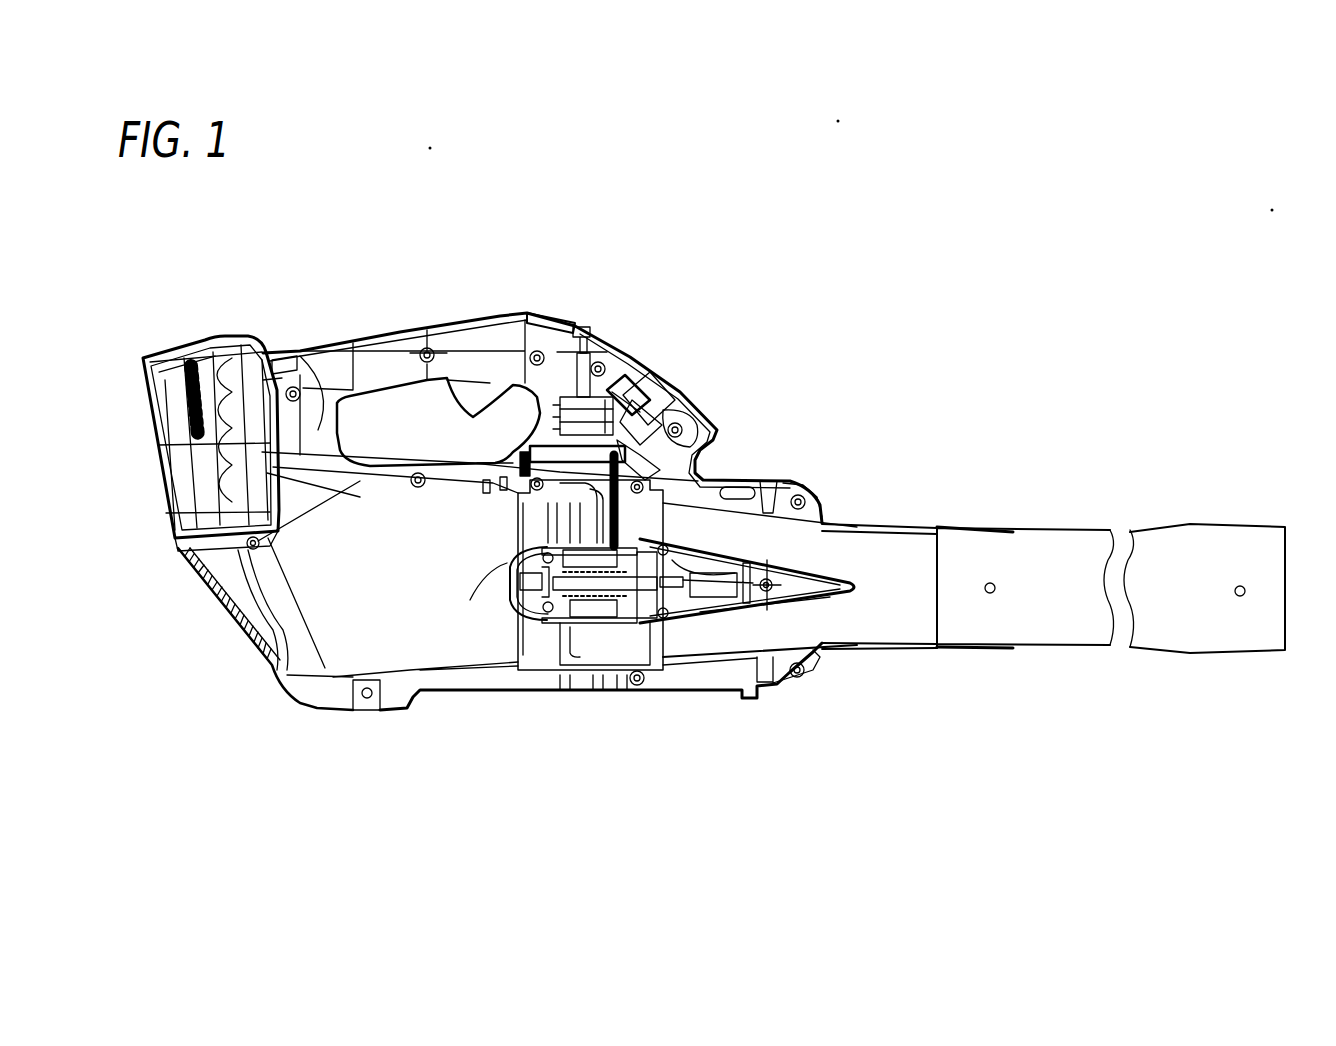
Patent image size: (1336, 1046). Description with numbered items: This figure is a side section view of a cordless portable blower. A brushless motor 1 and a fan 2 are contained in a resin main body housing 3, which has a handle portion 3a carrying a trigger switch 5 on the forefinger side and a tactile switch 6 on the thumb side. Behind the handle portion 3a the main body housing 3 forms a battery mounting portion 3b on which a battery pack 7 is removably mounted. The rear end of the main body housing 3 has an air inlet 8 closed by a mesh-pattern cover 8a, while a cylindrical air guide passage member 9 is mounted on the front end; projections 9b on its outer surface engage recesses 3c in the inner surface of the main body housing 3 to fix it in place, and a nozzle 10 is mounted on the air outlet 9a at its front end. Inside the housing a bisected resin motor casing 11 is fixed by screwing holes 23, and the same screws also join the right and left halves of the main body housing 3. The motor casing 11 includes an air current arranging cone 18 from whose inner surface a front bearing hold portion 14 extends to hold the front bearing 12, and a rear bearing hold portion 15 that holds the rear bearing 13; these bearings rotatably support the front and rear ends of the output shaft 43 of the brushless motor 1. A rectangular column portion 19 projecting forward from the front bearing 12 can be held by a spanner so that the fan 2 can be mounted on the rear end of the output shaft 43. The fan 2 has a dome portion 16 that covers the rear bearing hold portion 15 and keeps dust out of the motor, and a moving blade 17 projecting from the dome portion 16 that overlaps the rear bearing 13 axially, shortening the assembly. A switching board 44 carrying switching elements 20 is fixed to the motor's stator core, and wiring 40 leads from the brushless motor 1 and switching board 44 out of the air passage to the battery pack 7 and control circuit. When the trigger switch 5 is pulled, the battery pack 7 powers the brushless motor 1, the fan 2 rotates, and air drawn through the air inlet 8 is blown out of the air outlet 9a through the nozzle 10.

The brushless motor 1 is at (596, 614).
The fan 2 is at (503, 604).
The main body housing 3 is at (316, 709).
The handle portion 3a is at (381, 352).
The battery mounting portion 3b is at (312, 392).
The recesses 3c is at (765, 492).
The trigger switch 5 is at (489, 383).
The tactile switch 6 is at (550, 317).
The battery pack 7 is at (163, 377).
The air inlet 8 is at (212, 606).
The cover 8a is at (232, 604).
The air guide passage member 9 is at (892, 525).
The air outlet 9a is at (963, 546).
The projections 9b is at (690, 545).
The nozzle 10 is at (1158, 552).
The motor casing 11 is at (568, 664).
The front bearing 12 is at (675, 606).
The rear bearing 13 is at (517, 600).
The front bearing hold portion 14 is at (683, 560).
The rear bearing hold portion 15 is at (510, 553).
The dome portion 16 is at (507, 563).
The moving blade 17 is at (556, 632).
The air current arranging cone 18 is at (827, 600).
The rectangular column portion 19 is at (688, 622).
The switching elements 20 is at (647, 603).
The screwing holes 23 is at (540, 480).
The wiring 40 is at (630, 375).
The output shaft 43 is at (505, 625).
The switching board 44 is at (668, 392).